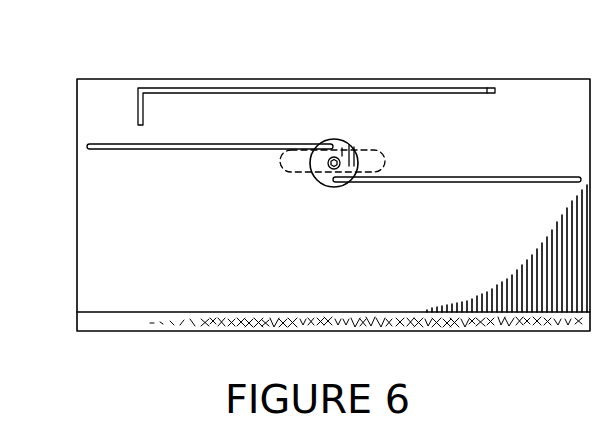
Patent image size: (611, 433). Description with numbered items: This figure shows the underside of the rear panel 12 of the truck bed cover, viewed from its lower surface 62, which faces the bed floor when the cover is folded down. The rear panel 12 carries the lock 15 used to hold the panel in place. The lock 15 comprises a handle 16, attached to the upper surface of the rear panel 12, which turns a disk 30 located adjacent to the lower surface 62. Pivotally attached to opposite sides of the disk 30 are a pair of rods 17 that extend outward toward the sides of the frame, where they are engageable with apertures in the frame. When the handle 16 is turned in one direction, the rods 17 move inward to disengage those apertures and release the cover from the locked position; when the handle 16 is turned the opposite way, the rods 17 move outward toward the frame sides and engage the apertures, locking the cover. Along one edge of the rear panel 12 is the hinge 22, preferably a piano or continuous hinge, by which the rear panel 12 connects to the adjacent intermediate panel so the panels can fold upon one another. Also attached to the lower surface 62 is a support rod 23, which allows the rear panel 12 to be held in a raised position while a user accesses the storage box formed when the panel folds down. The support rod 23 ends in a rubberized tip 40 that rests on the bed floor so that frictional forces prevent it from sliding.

The rear panel 12 is at (323, 285).
The lock 15 is at (468, 160).
The handle 16 is at (370, 150).
The rods 17 is at (170, 143).
The hinge 22 is at (493, 331).
The support rod 23 is at (315, 88).
The disk 30 is at (317, 178).
The rubberized tip 40 is at (488, 91).
The lower surface 62 is at (169, 261).